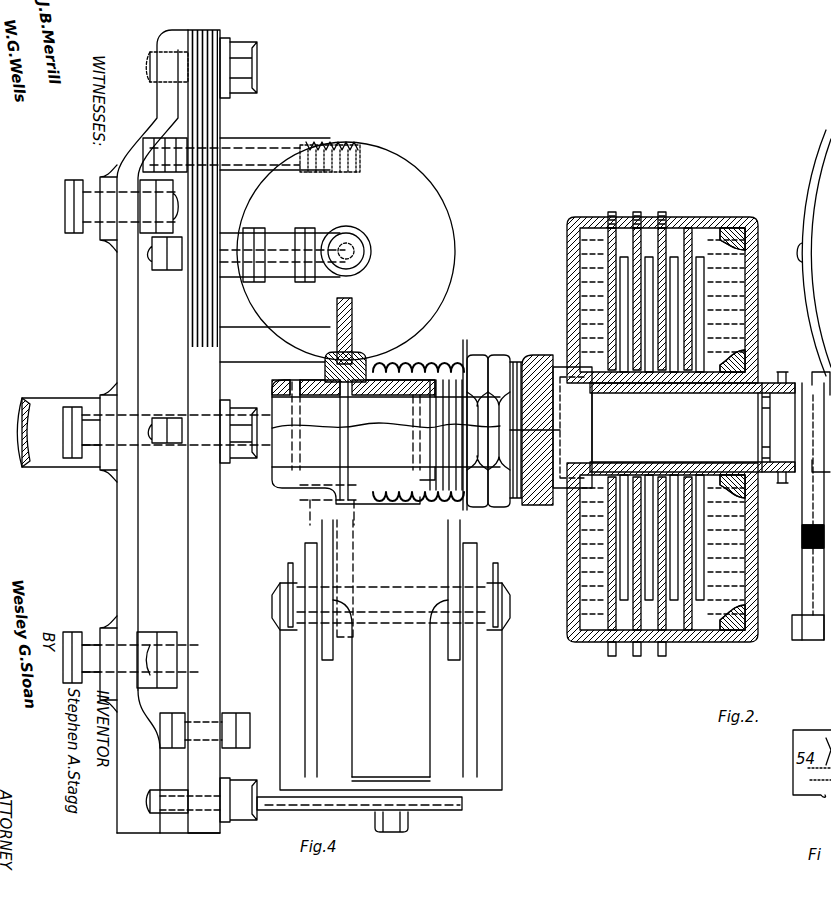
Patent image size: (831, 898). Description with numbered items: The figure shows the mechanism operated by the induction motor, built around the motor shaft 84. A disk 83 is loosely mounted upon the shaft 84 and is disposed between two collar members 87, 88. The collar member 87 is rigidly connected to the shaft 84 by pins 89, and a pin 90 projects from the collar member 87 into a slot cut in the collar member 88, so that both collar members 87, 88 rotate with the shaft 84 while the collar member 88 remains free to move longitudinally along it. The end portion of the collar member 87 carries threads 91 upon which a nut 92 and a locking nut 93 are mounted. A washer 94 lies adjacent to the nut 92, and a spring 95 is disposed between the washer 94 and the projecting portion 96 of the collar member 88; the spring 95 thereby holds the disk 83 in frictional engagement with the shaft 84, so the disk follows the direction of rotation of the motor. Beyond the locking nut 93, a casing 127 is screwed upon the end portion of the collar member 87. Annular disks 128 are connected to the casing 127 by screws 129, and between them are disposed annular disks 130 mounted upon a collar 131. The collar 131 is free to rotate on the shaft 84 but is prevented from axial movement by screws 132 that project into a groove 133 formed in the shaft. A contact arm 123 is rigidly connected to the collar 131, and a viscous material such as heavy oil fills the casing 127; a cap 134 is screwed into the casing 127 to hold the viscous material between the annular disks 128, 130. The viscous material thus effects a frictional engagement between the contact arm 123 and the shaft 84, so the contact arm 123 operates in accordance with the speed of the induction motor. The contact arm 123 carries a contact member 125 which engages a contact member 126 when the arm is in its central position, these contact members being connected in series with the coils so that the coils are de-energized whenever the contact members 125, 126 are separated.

In FIG. 4, the disk 83 is at (352, 318).
In FIG. 4, the shaft 84 is at (240, 470).
In FIG. 4, the collar member 87 is at (300, 505).
In FIG. 4, the collar member 88 is at (360, 500).
In FIG. 4, the pins 89 is at (413, 430).
In FIG. 4, the pin 90 is at (406, 412).
In FIG. 4, the threads 91 is at (520, 362).
In FIG. 4, the nut 92 is at (478, 355).
In FIG. 4, the locking nut 93 is at (498, 355).
In FIG. 4, the washer 94 is at (465, 340).
In FIG. 4, the spring 95 is at (432, 360).
In FIG. 4, the projecting portion 96 is at (366, 356).
In FIG. 2, the contact arm 123 is at (802, 577).
In FIG. 2, the contact member 125 is at (815, 640).
In FIG. 2, the contact member 126 is at (792, 636).
In FIG. 2, the casing 127 is at (583, 228).
In FIG. 2, the annular disks 128 is at (700, 228).
In FIG. 2, the screws 129 is at (640, 212).
In FIG. 2, the annular disks 130 is at (700, 555).
In FIG. 2, the collar 131 is at (570, 505).
In FIG. 2, the screws 132 is at (770, 372).
In FIG. 2, the groove 133 is at (806, 368).
In FIG. 2, the cap 134 is at (758, 330).